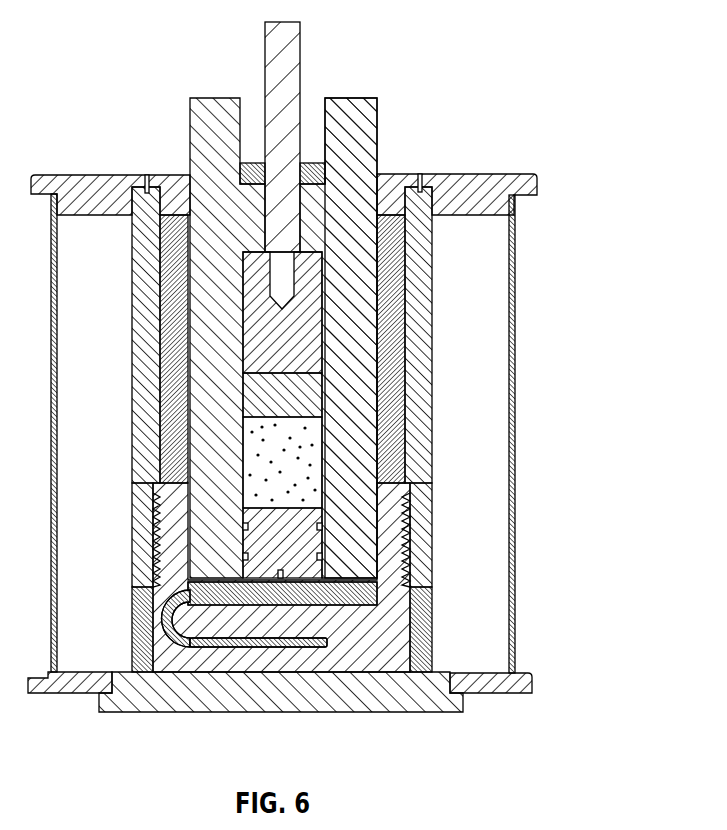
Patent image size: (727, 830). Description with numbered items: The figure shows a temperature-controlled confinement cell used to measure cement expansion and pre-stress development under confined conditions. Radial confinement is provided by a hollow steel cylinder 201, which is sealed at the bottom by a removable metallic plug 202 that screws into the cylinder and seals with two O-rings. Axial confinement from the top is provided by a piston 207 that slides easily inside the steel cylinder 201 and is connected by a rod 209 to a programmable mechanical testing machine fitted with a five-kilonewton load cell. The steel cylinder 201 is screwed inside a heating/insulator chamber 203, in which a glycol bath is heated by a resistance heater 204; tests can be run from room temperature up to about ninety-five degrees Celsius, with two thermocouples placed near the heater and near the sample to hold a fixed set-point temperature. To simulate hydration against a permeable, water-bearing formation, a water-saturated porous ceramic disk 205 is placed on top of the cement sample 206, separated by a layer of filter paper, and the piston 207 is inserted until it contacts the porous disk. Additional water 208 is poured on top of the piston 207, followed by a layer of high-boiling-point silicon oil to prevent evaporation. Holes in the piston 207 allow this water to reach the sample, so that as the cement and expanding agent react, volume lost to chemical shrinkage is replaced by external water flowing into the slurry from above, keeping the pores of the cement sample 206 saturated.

The hollow steel cylinder 201 is at (378, 110).
The removable metallic plug 202 is at (432, 608).
The heating/insulator chamber 203 is at (513, 592).
The resistance heater 204 is at (357, 668).
The porous ceramic disk 205 is at (308, 402).
The cement sample 206 is at (305, 477).
The piston 207 is at (315, 352).
The additional water 208 is at (350, 165).
The rod 209 is at (302, 66).